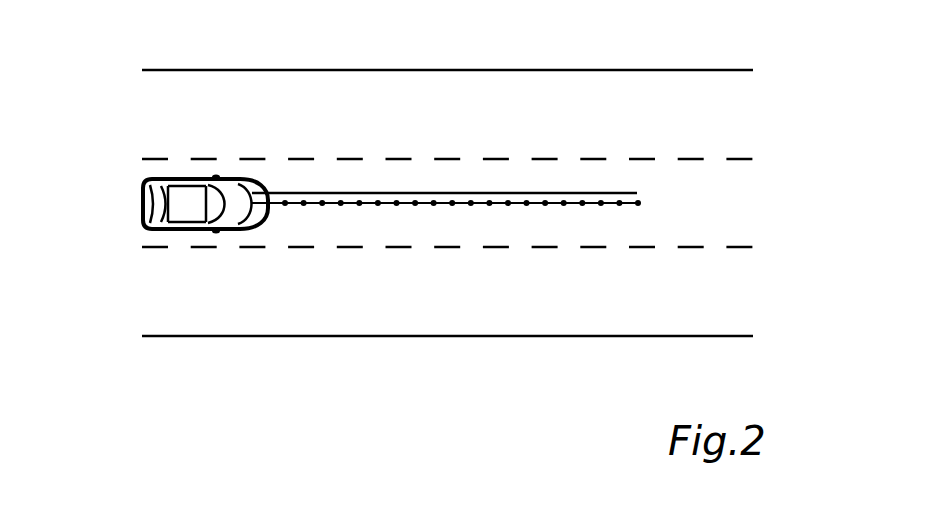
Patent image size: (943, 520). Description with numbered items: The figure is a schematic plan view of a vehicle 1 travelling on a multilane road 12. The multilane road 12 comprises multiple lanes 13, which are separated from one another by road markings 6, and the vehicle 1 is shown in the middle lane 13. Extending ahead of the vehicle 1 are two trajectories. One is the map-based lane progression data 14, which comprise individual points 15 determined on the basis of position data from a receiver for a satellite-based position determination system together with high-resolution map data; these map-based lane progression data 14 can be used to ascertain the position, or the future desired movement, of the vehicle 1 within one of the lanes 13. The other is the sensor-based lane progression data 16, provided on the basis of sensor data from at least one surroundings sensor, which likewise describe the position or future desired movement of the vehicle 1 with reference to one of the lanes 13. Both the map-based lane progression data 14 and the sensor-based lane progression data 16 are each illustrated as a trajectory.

The vehicle 1 is at (207, 178).
The road markings 6 is at (399, 159).
The multilane road 12 is at (435, 180).
The lanes 13 is at (147, 173).
The map-based lane progression data 14 is at (481, 203).
The individual points 15 is at (359, 203).
The sensor-based lane progression data 16 is at (517, 193).